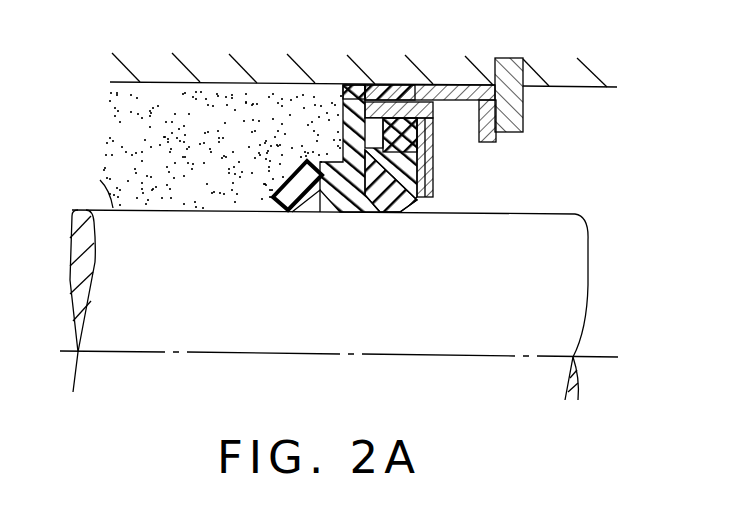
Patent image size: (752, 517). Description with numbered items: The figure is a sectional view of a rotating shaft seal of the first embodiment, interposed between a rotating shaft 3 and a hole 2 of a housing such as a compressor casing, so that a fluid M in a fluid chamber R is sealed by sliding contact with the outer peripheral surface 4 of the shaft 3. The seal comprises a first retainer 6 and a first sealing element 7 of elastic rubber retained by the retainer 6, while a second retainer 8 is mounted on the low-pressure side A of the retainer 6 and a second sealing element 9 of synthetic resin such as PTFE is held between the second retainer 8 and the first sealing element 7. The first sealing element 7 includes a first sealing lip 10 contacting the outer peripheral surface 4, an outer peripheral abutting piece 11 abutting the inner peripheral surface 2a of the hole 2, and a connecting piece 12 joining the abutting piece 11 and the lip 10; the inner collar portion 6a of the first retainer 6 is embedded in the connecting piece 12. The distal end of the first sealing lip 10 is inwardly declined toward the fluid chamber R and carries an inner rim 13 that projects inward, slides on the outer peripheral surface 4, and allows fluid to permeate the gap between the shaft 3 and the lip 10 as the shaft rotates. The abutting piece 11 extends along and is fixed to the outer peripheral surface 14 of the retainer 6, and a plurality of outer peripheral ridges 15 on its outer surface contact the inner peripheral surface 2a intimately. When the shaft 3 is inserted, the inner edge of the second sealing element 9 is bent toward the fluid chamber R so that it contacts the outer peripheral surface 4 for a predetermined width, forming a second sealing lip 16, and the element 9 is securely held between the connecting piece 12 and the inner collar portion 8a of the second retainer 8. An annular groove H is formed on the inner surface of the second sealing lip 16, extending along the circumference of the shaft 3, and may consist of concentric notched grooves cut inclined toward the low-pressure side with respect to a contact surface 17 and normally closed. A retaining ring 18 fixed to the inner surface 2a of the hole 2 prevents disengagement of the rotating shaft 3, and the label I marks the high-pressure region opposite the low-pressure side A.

The hole 2 is at (578, 93).
The inner peripheral surface 2a is at (596, 88).
The rotating shaft 3 is at (568, 209).
The outer peripheral surface 4 is at (100, 180).
The first retainer 6 is at (484, 104).
The inner collar portion 6a is at (433, 150).
The first sealing element 7 is at (336, 106).
The second retainer 8 is at (444, 196).
The inner collar portion 8a is at (433, 170).
The second sealing element 9 is at (418, 206).
The first sealing lip 10 is at (300, 214).
The outer peripheral abutting piece 11 is at (439, 84).
The connecting piece 12 is at (343, 137).
The inner rim 13 is at (283, 206).
The outer peripheral surface 14 is at (464, 96).
The outer peripheral ridges 15 is at (412, 82).
The second sealing lip 16 is at (352, 216).
The contact surface 17 is at (358, 213).
The retaining ring 18 is at (516, 60).
The annular groove H is at (340, 213).
The fluid M is at (117, 111).
The fluid chamber R is at (160, 157).
The inner side I is at (265, 49).
The low-pressure side A is at (583, 165).